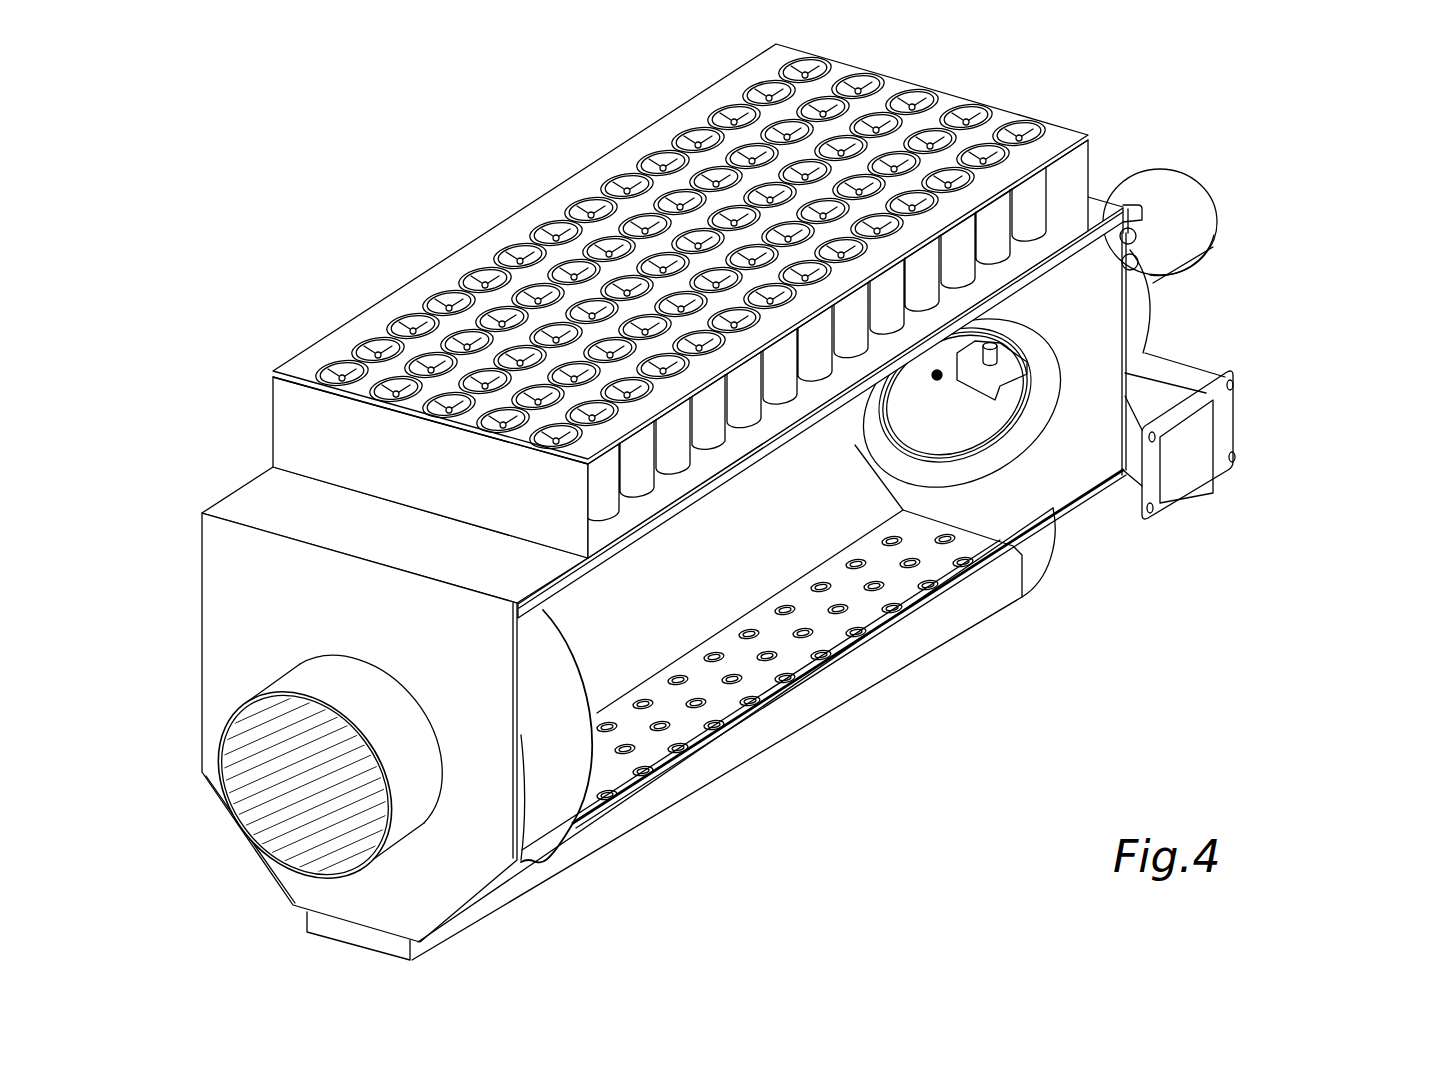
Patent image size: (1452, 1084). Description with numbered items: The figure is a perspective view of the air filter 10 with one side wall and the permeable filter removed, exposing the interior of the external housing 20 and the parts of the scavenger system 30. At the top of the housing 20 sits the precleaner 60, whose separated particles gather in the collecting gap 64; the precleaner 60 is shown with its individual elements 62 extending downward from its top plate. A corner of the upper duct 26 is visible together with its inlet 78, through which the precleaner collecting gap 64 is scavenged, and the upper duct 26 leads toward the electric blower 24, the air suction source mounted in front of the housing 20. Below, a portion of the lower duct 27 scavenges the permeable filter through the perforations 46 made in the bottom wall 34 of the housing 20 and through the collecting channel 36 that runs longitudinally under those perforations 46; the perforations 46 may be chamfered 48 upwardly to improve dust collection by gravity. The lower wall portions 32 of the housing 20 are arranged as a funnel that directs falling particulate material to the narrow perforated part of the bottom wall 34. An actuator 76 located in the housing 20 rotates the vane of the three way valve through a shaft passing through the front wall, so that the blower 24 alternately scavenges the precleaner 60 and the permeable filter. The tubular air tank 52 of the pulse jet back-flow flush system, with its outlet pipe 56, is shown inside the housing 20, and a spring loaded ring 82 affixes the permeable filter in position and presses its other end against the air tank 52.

The air filter 10 is at (1360, 190).
The external housing 20 is at (245, 495).
The electric blower 24 is at (1167, 378).
The upper duct 26 is at (1140, 213).
The lower duct 27 is at (1047, 568).
The scavenger system 30 is at (1221, 556).
The lower wall portions 32 is at (568, 840).
The bottom wall 34 is at (893, 593).
The collecting channel 36 is at (850, 690).
The perforations 46 is at (757, 605).
The chamfer 48 is at (782, 590).
The air tank 52 is at (565, 672).
The outlet pipe 56 is at (237, 728).
The precleaner 60 is at (709, 301).
The tubes 62 is at (1035, 195).
The collecting gap 64 is at (1068, 283).
The actuator 76 is at (975, 422).
The inlet 78 is at (1222, 258).
The spring loaded ring 82 is at (1043, 366).